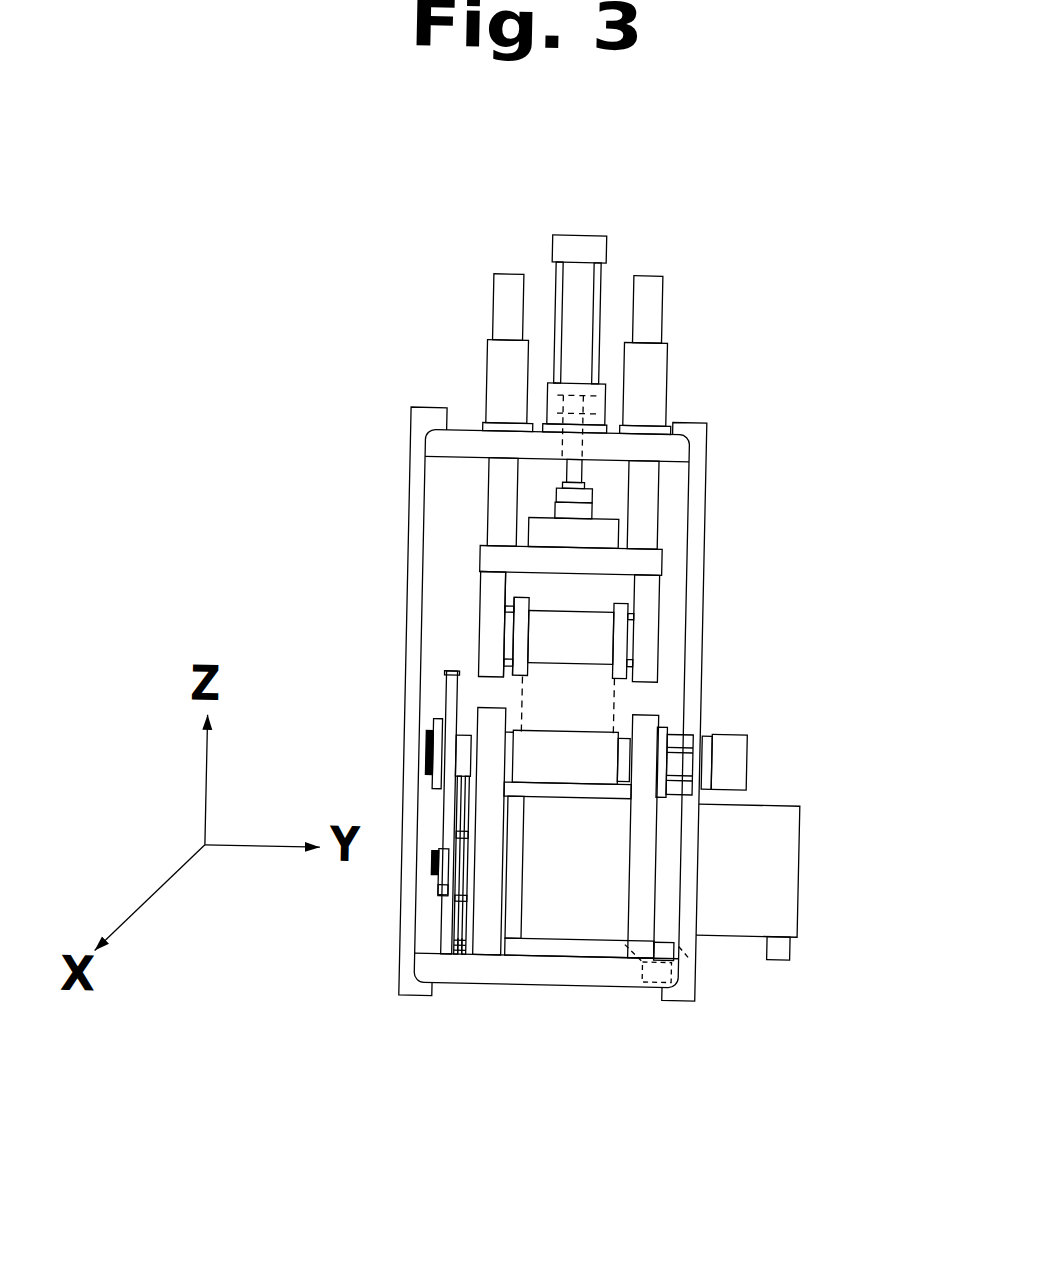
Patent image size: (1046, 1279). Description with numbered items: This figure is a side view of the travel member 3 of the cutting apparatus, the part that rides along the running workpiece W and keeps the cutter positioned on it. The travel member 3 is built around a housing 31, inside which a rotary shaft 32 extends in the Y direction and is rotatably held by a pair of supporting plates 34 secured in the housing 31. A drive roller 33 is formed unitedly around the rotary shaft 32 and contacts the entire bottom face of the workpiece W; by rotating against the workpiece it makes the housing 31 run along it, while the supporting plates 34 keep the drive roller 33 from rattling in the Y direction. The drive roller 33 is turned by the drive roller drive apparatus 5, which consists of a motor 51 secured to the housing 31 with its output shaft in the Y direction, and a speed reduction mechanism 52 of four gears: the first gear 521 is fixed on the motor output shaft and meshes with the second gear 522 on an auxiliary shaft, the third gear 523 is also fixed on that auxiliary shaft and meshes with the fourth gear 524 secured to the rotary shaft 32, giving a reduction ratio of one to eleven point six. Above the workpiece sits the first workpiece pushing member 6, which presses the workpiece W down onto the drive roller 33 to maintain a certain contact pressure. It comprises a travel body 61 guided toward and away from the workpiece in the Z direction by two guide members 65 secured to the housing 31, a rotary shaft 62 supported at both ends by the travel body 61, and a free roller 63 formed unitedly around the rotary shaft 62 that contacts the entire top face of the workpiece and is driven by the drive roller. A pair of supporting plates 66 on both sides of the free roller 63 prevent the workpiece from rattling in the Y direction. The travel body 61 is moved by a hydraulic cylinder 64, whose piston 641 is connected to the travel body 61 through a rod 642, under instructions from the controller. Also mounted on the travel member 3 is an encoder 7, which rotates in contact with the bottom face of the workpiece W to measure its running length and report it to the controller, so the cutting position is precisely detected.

The travel member 3 is at (723, 519).
The housing 31 is at (694, 545).
The rotary shaft 32 is at (463, 750).
The drive roller 33 is at (602, 756).
The supporting plates 34 is at (643, 841).
The drive roller drive apparatus 5 is at (592, 913).
The motor 51 is at (554, 890).
The speed reduction mechanism 52 is at (449, 905).
The first gear 521 is at (465, 840).
The second gear 522 is at (468, 959).
The third gear 523 is at (446, 902).
The fourth gear 524 is at (450, 707).
The first workpiece pushing member 6 is at (601, 589).
The travel body 61 is at (644, 563).
The rotary shaft 62 is at (504, 641).
The free roller 63 is at (511, 634).
The hydraulic cylinder 64 is at (538, 240).
The piston 641 is at (571, 399).
The rod 642 is at (568, 472).
The guide members 65 is at (491, 356).
The supporting plates 66 is at (558, 625).
The encoder 7 is at (738, 746).
The workpiece W is at (615, 693).